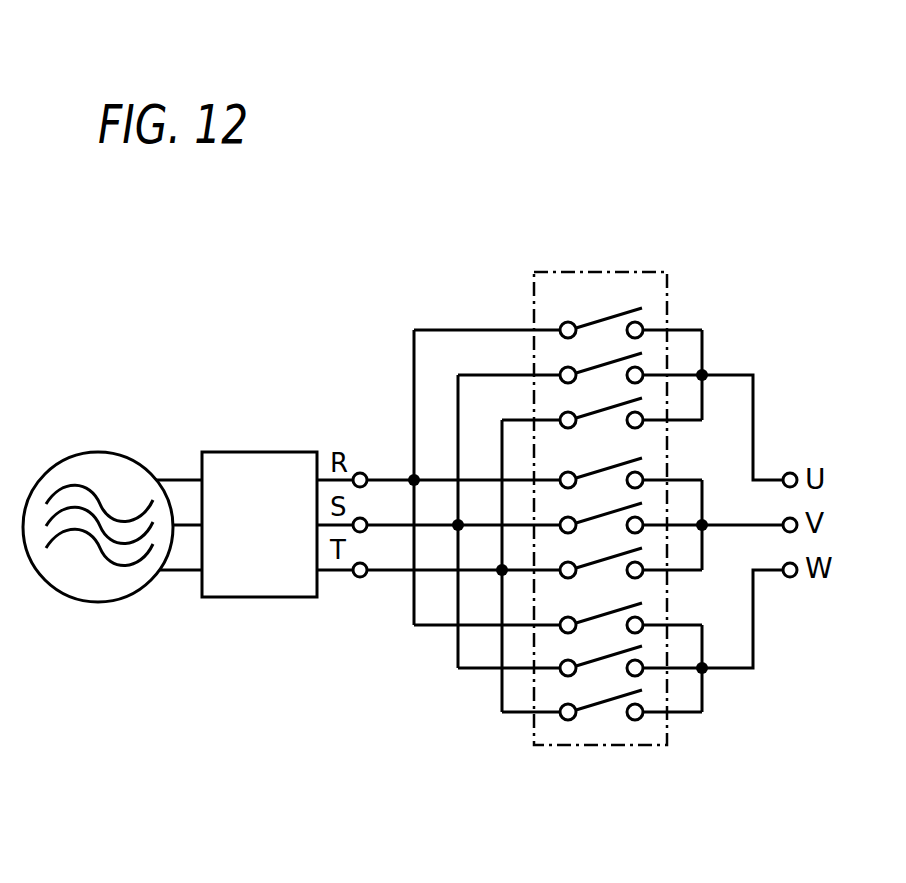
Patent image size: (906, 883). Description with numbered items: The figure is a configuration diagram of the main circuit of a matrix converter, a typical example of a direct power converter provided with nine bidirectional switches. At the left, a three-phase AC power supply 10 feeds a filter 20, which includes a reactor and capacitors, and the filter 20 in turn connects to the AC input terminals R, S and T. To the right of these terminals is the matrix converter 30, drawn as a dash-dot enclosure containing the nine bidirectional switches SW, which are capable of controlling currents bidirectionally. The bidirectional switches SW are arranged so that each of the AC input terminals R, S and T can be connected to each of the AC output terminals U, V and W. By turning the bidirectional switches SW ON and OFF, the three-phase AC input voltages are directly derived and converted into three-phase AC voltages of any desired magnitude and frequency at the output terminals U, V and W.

The three-phase AC power supply 10 is at (106, 458).
The filter 20 is at (245, 456).
The matrix converter 30 is at (574, 272).
The bidirectional switches SW is at (608, 352).